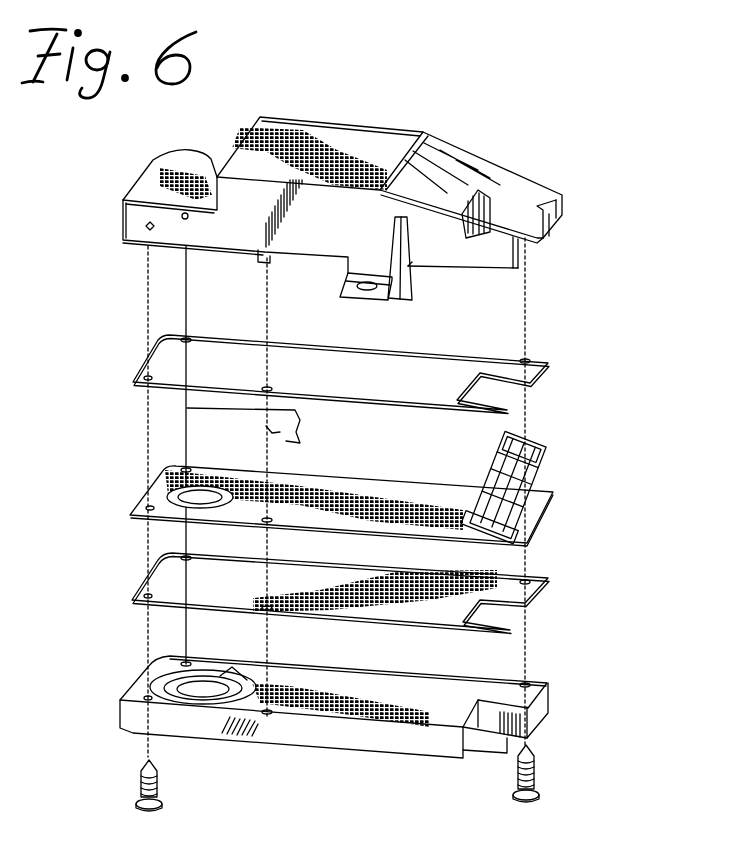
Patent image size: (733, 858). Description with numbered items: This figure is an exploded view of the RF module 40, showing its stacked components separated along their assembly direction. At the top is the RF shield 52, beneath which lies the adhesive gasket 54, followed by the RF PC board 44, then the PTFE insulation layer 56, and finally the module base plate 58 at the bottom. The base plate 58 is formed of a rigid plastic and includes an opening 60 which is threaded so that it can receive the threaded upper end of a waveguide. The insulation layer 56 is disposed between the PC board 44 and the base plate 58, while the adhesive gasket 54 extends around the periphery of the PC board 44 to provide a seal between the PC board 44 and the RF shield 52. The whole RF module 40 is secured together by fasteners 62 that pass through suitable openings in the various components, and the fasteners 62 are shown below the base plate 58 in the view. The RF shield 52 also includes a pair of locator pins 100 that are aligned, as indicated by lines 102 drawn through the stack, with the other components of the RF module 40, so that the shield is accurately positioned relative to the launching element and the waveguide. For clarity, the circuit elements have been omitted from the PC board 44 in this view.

The RF module 40 is at (521, 130).
The RF shield 52 is at (543, 198).
The locator pins 100 is at (269, 264).
The adhesive gasket 54 is at (546, 360).
The lines 102 is at (302, 441).
The RF PC board 44 is at (560, 487).
The PTFE insulation layer 56 is at (546, 578).
The module base plate 58 is at (548, 682).
The opening 60 is at (262, 737).
The fasteners 62 is at (165, 783).